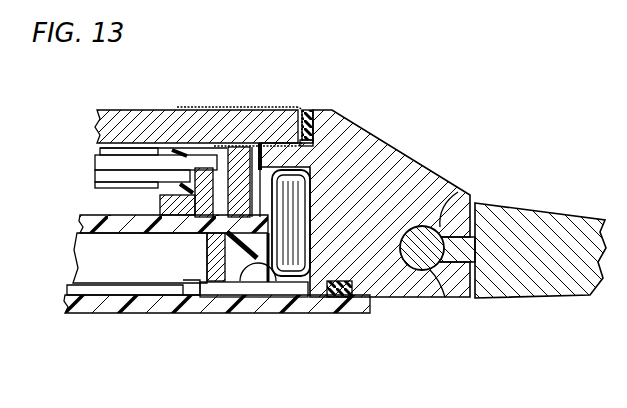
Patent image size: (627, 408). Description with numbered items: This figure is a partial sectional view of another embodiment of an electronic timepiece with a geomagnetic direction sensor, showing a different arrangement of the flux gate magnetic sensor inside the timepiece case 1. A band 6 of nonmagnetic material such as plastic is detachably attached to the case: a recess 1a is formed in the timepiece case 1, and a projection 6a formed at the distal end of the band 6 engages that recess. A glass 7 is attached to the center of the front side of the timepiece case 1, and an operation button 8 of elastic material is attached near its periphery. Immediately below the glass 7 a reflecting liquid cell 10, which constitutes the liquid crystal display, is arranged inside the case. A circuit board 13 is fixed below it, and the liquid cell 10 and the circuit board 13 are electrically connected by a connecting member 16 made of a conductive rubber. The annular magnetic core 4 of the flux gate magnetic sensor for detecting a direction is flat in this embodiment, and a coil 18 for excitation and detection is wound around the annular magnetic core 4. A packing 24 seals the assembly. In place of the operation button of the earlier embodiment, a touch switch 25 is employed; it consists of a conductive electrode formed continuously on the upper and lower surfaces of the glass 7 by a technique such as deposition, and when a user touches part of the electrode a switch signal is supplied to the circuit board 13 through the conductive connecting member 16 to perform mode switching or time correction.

The timepiece case 1 is at (369, 133).
The recess 1a is at (442, 224).
The annular magnetic core 4 is at (292, 222).
The band 6 is at (530, 217).
The projection 6a is at (428, 266).
The glass 7 is at (110, 131).
The operation button 8 is at (299, 312).
The liquid cell 10 is at (107, 163).
The circuit board 13 is at (95, 225).
The connecting member 16 is at (238, 152).
The coil 18 is at (322, 140).
The packing 24 is at (308, 110).
The touch switch 25 is at (262, 107).